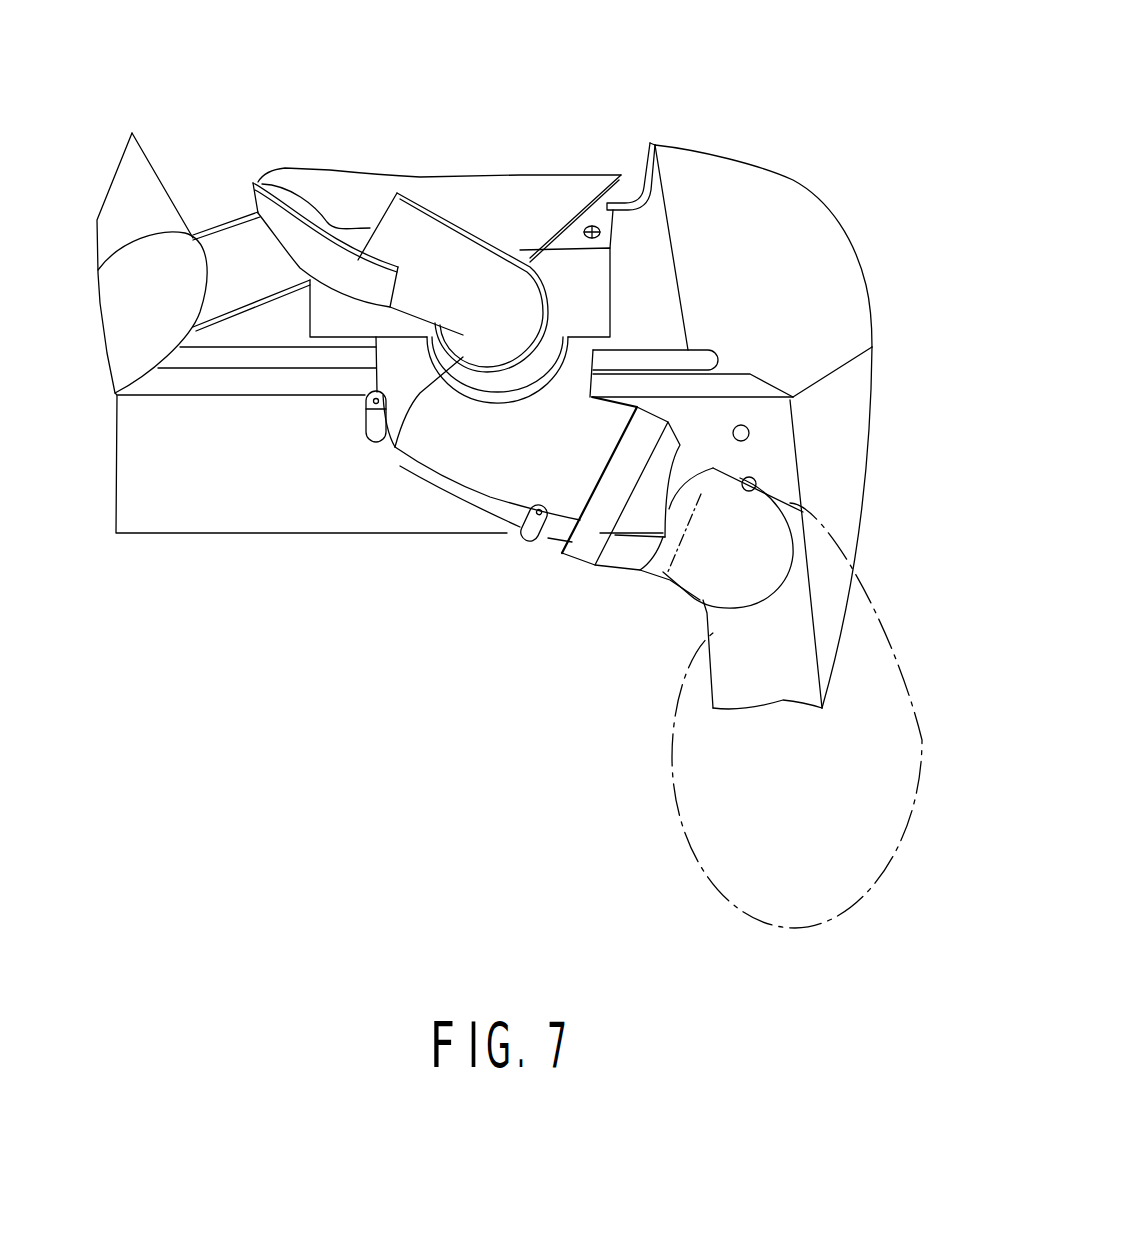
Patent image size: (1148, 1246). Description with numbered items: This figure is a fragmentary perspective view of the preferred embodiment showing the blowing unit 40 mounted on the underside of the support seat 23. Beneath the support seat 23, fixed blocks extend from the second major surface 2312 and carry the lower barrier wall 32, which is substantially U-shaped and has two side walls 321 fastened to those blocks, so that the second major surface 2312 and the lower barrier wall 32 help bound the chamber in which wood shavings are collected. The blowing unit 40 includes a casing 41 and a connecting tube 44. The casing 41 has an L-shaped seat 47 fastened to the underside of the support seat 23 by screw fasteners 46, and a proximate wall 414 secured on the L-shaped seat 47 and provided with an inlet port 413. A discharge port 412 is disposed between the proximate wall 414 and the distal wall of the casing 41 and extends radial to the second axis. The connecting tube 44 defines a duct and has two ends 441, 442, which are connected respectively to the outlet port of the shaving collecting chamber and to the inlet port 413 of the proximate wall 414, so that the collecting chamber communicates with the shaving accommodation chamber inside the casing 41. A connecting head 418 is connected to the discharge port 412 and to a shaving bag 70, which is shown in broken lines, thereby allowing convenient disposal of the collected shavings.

The lower barrier wall 32 is at (258, 236).
The side walls 321 is at (255, 183).
The second major surface 2312 is at (310, 183).
The end of connecting tube 441 is at (385, 215).
The connecting tube 44 is at (462, 202).
The support seat 23 is at (634, 196).
The screw fasteners 46 is at (598, 234).
The L-shaped seat 47 is at (600, 283).
The proximate wall 414 is at (437, 437).
The blowing unit 40 is at (458, 502).
The discharge port 412 is at (546, 518).
The end of connecting tube 442 is at (395, 447).
The inlet port 413 is at (380, 698).
The casing 41 is at (497, 513).
The connecting head 418 is at (585, 548).
The shaving bag 70 is at (731, 905).